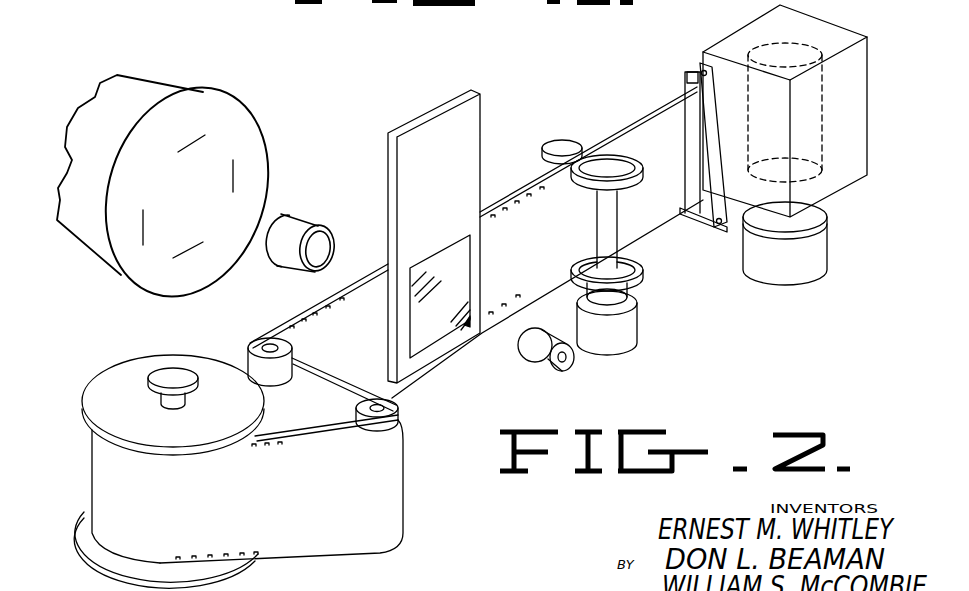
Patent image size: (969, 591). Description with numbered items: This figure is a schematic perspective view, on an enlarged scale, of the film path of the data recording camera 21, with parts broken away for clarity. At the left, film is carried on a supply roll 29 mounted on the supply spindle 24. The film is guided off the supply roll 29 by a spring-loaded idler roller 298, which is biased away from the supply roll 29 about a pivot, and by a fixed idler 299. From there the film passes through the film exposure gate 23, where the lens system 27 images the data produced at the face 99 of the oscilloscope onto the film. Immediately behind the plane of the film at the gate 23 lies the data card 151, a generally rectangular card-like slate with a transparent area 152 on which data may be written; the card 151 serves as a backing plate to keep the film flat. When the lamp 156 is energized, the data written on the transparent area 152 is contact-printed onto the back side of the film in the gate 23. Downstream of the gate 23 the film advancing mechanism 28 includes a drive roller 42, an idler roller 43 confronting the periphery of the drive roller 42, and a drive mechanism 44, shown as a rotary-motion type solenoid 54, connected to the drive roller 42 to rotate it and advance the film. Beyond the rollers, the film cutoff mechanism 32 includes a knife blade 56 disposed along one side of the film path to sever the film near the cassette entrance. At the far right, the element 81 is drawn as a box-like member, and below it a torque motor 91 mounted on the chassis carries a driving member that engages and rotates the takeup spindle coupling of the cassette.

The face of the oscilloscope 99 is at (248, 152).
The lens system 27 is at (300, 221).
The supply roll 29 is at (102, 482).
The supply spindle 24 is at (172, 377).
The data recording camera 21 is at (428, 442).
The fixed idler 299 is at (291, 347).
The spring-loaded idler roller 298 is at (398, 405).
The data card 151 is at (448, 112).
The transparent area 152 is at (440, 330).
The film exposure gate 23 is at (492, 188).
The idler roller 43 is at (562, 149).
The film advancing mechanism 28 is at (591, 145).
The drive roller 42 is at (642, 274).
The drive mechanism 44 is at (645, 334).
The rotary-motion type solenoid 54 is at (616, 346).
The lamp 156 is at (545, 358).
The film cutoff mechanism 32 is at (690, 64).
The knife blade 56 is at (706, 136).
The housing 81 is at (818, 13).
The torque motor 91 is at (823, 267).